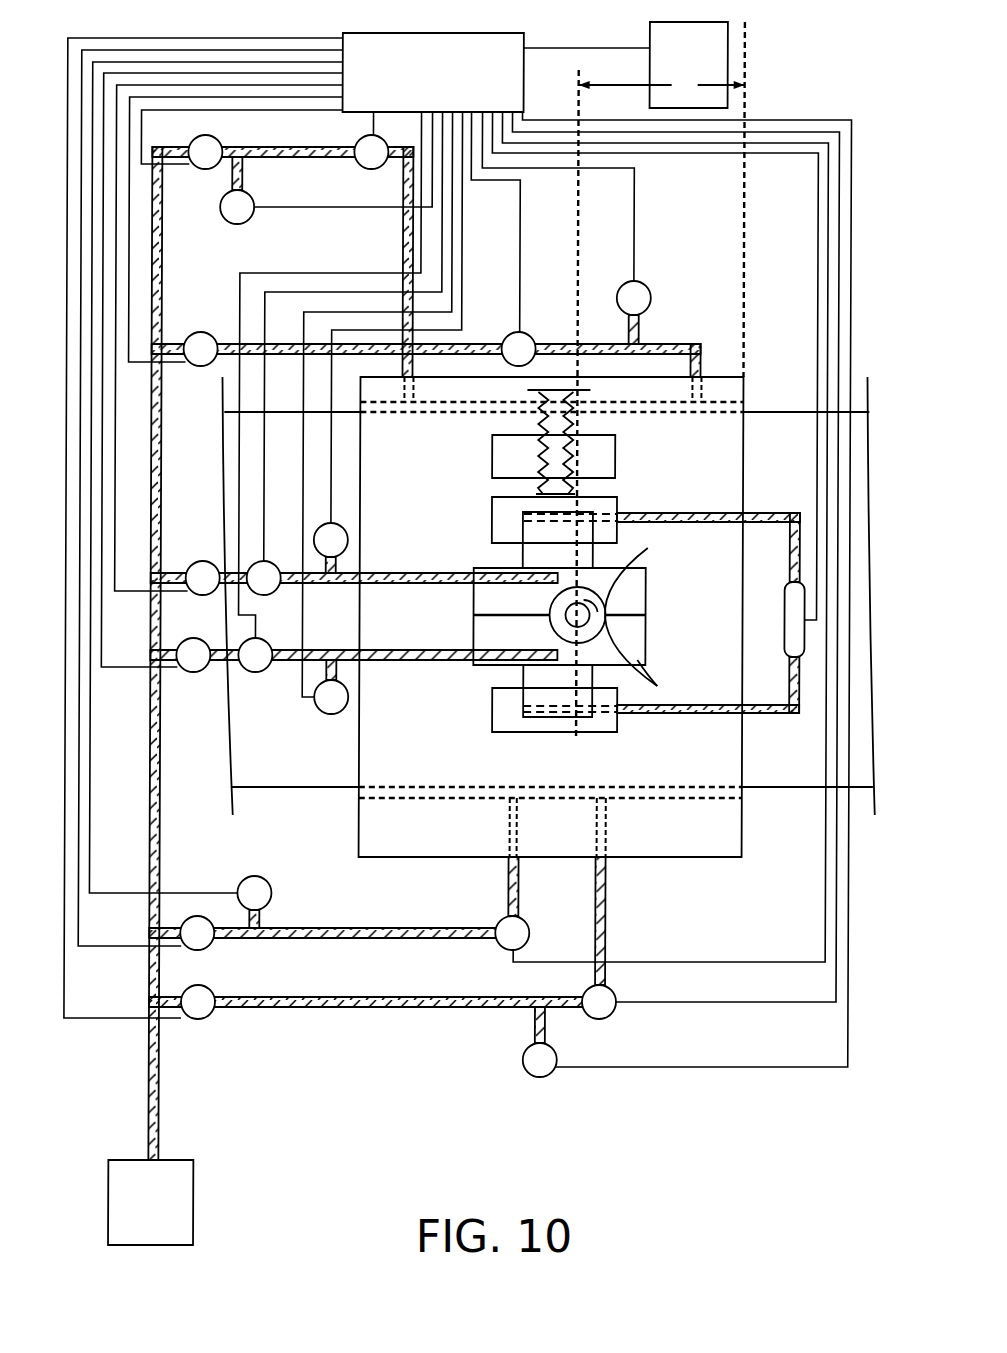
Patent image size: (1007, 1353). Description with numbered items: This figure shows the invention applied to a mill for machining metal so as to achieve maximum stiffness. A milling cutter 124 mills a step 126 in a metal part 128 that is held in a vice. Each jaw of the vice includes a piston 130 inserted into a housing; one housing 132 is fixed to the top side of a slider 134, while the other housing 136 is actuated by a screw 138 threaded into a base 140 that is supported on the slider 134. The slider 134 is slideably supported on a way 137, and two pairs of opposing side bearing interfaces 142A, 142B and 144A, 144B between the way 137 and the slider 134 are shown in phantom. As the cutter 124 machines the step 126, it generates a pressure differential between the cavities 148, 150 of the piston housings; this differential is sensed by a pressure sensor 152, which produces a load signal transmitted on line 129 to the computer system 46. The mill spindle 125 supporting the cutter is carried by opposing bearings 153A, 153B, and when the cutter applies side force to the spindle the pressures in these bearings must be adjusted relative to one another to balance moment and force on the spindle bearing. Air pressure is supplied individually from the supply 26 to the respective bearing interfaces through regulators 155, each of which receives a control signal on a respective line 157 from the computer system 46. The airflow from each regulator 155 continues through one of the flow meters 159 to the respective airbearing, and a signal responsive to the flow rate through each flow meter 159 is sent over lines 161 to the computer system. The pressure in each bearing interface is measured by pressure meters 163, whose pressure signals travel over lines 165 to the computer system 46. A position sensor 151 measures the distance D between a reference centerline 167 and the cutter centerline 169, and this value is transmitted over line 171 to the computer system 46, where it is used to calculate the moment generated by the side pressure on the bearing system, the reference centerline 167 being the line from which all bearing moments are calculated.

The supply 26 is at (146, 1212).
The computer system 46 is at (422, 82).
The milling cutter 124 is at (540, 620).
The mill spindle 125 is at (608, 618).
The step 126 is at (492, 616).
The metal part 128 is at (476, 636).
The line 129 is at (818, 460).
The piston 130 is at (525, 556).
The housing 132 is at (495, 730).
The slider 134 is at (421, 858).
The housing 136 is at (494, 520).
The way 137 is at (554, 610).
The screw 138 is at (538, 422).
The base 140 is at (618, 449).
The side bearing interface 142A is at (660, 787).
The side bearing interface 142B is at (702, 414).
The side bearing interface 144A is at (488, 799).
The side bearing interface 144B is at (577, 388).
The cavity 148 is at (603, 512).
The cavity 150 is at (566, 718).
The position sensor 151 is at (673, 54).
The pressure sensor 152 is at (790, 658).
The bearing 153A is at (639, 611).
The bearing 153B is at (671, 676).
The regulator 155 is at (199, 577).
The line 157 is at (143, 150).
The flow meter 159 is at (428, 577).
The line 161 is at (373, 132).
The pressure meter 163 is at (434, 617).
The line 165 is at (318, 207).
The reference centerline 167 is at (745, 116).
The cutter centerline 169 is at (583, 95).
The line 171 is at (587, 37).